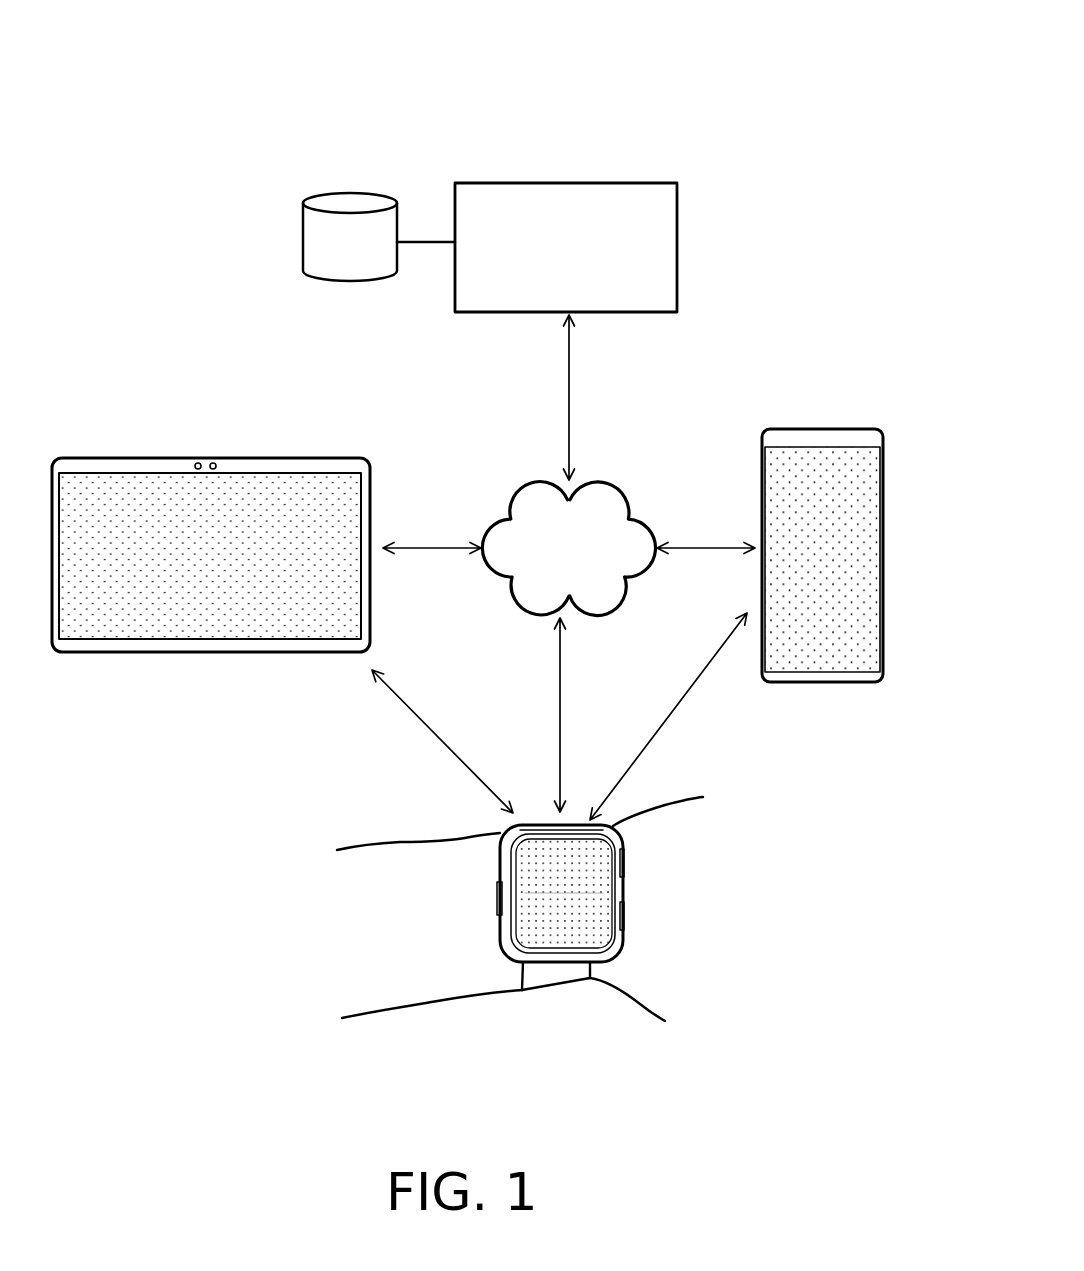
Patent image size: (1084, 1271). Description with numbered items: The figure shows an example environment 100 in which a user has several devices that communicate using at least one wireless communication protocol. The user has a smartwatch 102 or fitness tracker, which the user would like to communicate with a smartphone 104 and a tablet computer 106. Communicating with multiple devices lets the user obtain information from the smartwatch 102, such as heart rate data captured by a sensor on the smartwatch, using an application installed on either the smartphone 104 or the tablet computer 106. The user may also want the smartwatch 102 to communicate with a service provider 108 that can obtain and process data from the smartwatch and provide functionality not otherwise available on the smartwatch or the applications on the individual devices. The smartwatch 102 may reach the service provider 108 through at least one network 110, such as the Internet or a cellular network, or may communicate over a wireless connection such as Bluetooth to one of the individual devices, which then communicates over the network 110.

The environment 100 is at (898, 120).
The smartwatch 102 is at (553, 985).
The smartphone 104 is at (865, 429).
The tablet computer 106 is at (162, 458).
The service provider 108 is at (618, 183).
The network 110 is at (550, 590).